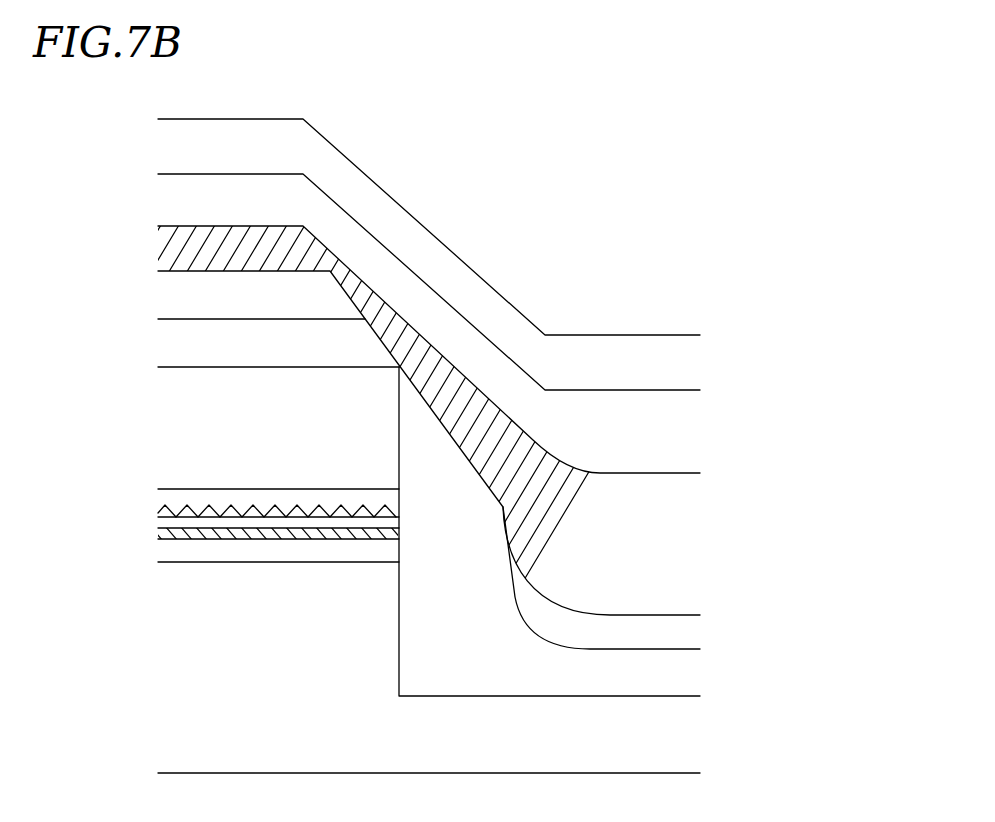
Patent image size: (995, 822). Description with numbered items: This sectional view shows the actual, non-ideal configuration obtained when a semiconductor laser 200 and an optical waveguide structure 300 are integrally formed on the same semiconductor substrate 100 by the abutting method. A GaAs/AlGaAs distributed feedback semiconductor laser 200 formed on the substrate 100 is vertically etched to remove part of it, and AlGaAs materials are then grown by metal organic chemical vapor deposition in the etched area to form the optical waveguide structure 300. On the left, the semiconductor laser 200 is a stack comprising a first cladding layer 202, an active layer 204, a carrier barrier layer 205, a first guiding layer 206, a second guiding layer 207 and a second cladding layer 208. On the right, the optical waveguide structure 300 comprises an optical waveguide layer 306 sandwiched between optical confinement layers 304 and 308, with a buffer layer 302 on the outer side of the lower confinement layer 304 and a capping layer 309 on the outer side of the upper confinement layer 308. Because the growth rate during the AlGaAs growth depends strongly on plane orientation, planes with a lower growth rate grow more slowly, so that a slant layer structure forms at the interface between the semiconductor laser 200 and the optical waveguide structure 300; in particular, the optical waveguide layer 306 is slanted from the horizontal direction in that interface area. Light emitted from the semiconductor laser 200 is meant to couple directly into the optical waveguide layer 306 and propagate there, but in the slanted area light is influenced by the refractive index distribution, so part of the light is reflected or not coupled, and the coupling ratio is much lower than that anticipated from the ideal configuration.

The semiconductor substrate 100 is at (680, 735).
The semiconductor laser 200 is at (233, 107).
The first cladding layer 202 is at (173, 548).
The active layer 204 is at (163, 535).
The carrier barrier layer 205 is at (160, 520).
The first guiding layer 206 is at (158, 512).
The second guiding layer 207 is at (158, 492).
The second cladding layer 208 is at (185, 407).
The optical waveguide structure 300 is at (630, 319).
The buffer layer 302 is at (170, 340).
The optical confinement layer 304 is at (170, 292).
The optical waveguide layer 306 is at (687, 510).
The optical confinement layer 308 is at (687, 431).
The capping layer 309 is at (685, 357).